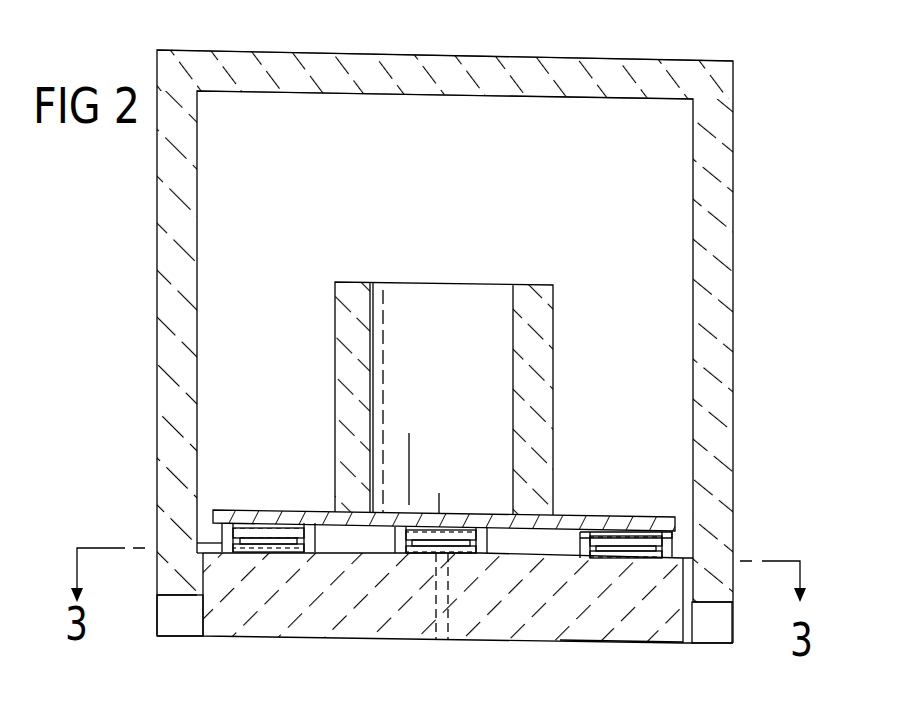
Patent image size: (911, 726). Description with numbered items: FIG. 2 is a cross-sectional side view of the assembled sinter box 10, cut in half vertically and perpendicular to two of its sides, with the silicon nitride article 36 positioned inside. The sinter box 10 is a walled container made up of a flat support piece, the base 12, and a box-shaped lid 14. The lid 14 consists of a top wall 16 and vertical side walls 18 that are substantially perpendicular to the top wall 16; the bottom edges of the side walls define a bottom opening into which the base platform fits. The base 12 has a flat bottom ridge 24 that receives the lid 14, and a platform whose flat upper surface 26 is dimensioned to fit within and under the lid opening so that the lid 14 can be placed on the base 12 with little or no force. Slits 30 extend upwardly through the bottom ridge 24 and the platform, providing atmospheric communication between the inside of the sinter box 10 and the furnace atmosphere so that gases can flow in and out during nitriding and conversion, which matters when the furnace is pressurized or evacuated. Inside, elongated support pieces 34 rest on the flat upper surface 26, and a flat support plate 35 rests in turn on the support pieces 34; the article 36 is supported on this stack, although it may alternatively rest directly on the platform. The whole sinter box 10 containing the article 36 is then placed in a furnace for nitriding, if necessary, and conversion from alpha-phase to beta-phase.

The sinter box 10 is at (441, 321).
The base 12 is at (292, 650).
The box-shaped lid 14 is at (143, 327).
The top wall 16 is at (605, 60).
The vertical side wall 18 is at (733, 310).
The flat bottom ridge 24 is at (610, 643).
The platform / flat upper surface 26 is at (320, 526).
The slits 30 is at (197, 596).
The elongated support pieces 34 is at (197, 543).
The flat support plate 35 is at (588, 524).
The silicon nitride article 36 is at (553, 350).